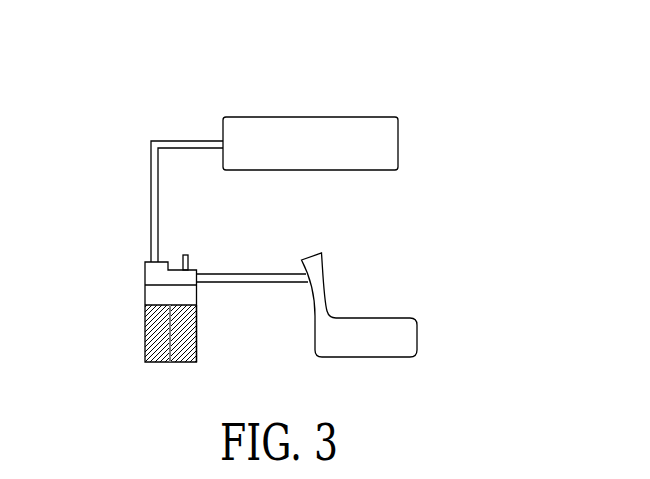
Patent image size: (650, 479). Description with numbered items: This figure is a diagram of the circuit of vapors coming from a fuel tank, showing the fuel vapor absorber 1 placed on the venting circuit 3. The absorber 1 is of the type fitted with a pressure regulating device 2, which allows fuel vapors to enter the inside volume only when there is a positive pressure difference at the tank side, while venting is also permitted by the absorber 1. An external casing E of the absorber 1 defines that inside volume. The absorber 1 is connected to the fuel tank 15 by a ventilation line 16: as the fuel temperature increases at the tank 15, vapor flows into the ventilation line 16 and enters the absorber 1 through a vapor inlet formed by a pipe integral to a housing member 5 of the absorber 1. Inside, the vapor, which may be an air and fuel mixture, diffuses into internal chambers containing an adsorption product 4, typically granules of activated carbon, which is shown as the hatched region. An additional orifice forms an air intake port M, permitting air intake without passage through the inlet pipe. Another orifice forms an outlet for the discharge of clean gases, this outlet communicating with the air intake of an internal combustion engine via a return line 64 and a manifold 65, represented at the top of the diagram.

The fuel vapor absorber 1 is at (177, 356).
The pressure regulating device 2 is at (143, 268).
The venting circuit 3 is at (341, 272).
The adsorption product 4 is at (158, 337).
The housing member 5 is at (146, 261).
The fuel tank 15 is at (420, 332).
The ventilation line 16 is at (250, 283).
The return line 64 is at (150, 185).
The manifold 65 is at (400, 143).
The external casing E is at (197, 338).
The air intake port M is at (187, 255).